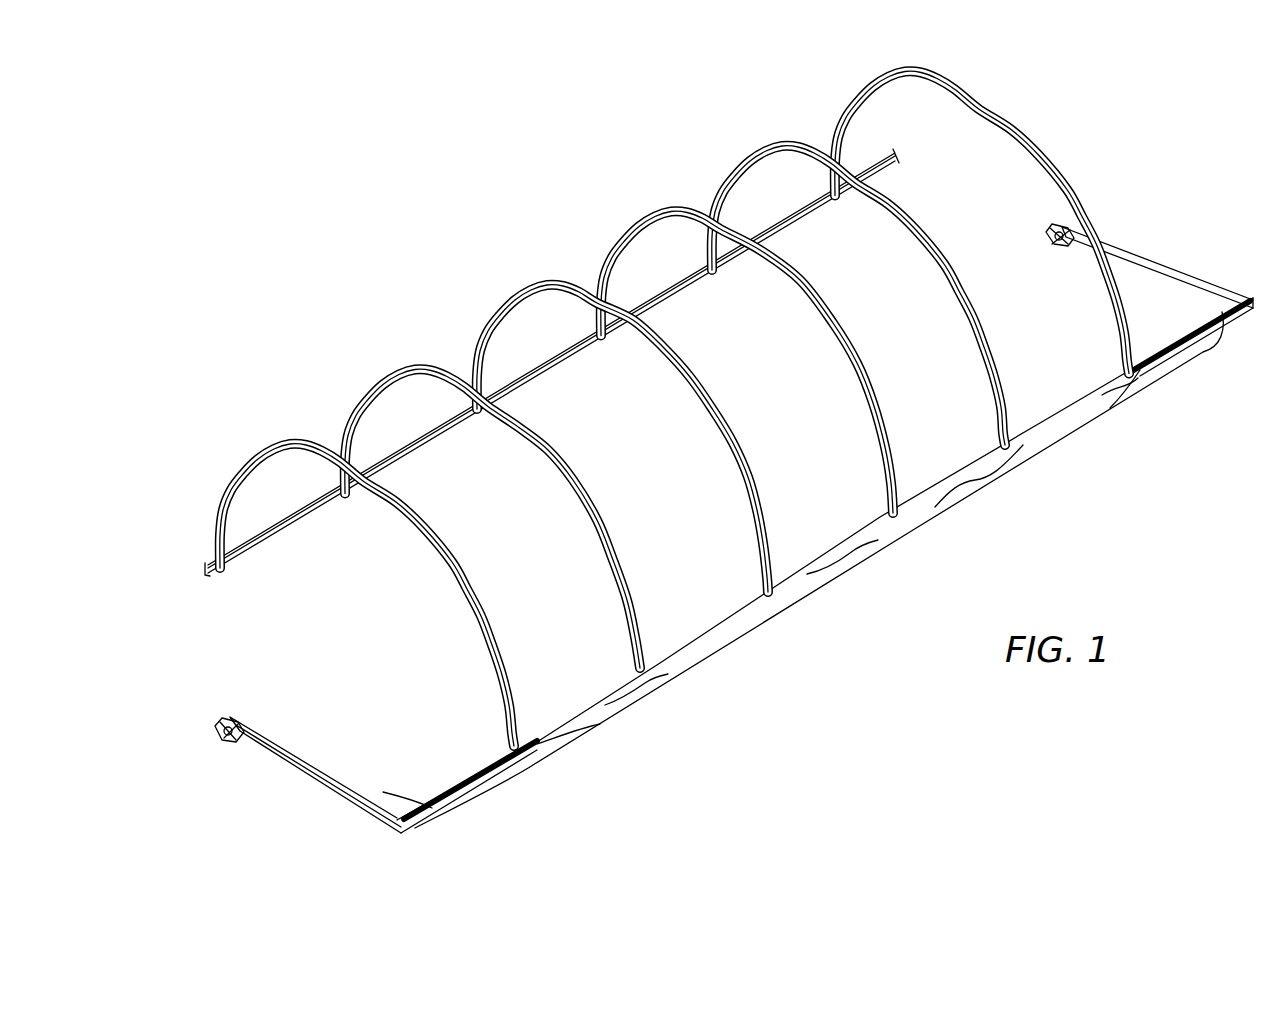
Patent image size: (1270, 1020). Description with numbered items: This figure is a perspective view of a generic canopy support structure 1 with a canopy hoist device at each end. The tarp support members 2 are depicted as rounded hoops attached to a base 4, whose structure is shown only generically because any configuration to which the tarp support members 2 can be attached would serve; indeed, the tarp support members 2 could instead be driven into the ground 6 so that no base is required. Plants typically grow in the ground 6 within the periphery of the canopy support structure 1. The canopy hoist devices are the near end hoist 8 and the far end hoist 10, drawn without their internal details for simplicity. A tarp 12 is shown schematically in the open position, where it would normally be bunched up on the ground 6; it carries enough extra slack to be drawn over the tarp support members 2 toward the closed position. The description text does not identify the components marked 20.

The canopy support structure 1 is at (506, 190).
The tarp support members 2 is at (285, 440).
The base 4 is at (882, 165).
The ground 6 is at (1158, 218).
The near end hoist 8 is at (292, 768).
The far end hoist 10 is at (1193, 278).
The tarp 12 is at (788, 588).
The hinge bracket 20 is at (218, 738).